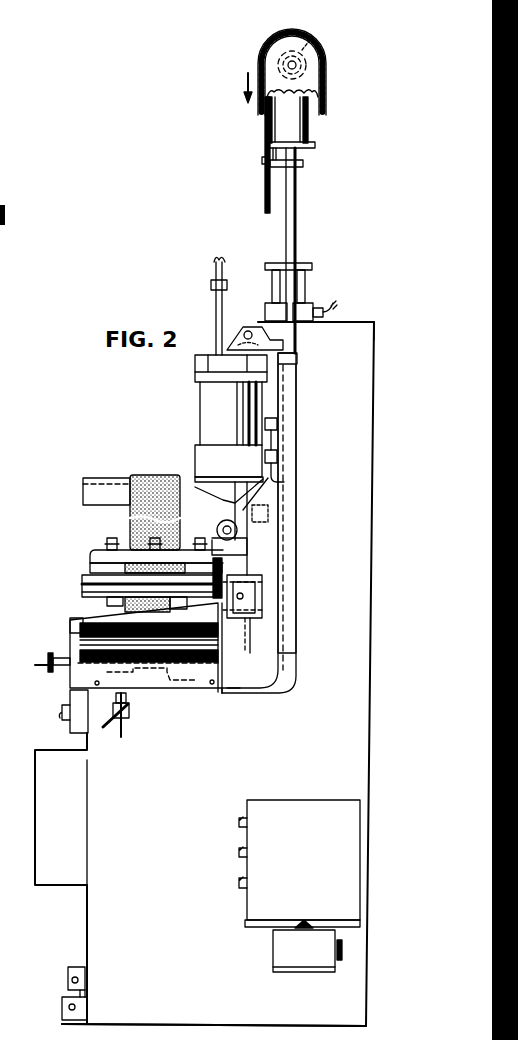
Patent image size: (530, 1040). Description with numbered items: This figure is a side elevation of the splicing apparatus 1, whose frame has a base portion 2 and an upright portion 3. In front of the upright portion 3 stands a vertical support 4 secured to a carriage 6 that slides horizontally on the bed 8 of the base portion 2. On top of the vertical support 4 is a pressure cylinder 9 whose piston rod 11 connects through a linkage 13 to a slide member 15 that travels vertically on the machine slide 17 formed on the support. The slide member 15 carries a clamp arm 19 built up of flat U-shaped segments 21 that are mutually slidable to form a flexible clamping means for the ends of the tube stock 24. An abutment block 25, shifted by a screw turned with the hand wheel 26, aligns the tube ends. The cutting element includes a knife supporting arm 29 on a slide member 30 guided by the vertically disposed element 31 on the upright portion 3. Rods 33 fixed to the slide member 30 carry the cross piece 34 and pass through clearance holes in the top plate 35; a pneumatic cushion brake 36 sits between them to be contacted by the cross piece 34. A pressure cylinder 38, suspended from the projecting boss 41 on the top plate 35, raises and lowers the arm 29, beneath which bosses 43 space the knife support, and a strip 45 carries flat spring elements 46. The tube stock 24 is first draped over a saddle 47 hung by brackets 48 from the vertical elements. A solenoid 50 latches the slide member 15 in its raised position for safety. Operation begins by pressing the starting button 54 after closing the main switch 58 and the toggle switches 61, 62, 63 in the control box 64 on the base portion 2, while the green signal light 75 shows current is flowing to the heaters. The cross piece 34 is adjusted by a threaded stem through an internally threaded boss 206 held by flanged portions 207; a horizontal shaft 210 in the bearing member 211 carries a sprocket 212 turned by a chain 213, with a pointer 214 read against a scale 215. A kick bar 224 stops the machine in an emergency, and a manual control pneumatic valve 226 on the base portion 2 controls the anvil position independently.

The splicing apparatus 1 is at (62, 833).
The base portion 2 is at (97, 942).
The upright portion 3 is at (342, 333).
The vertical support 4 is at (273, 652).
The carriage 6 is at (213, 678).
The bed 8 is at (170, 681).
The pressure cylinder 9 is at (205, 422).
The piston rod 11 is at (223, 510).
The linkage 13 is at (238, 530).
The slide member 15 is at (238, 555).
The machine slide 17 is at (247, 505).
The clamp arm 19 is at (83, 618).
The segment 21 is at (70, 628).
The tube stock 24 is at (148, 476).
The abutment block 25 is at (120, 658).
The hand wheel 26 is at (48, 655).
The knife supporting arm 29 is at (92, 555).
The slide member 30 is at (293, 362).
The vertically disposed element 31 is at (290, 392).
The rod 33 is at (298, 221).
The cross piece 34 is at (300, 163).
The top plate 35 is at (367, 320).
The pneumatic cushion brake 36 is at (302, 278).
The pressure cylinder 38 is at (260, 412).
The projecting boss 41 is at (270, 333).
The boss 43 is at (110, 572).
The strip 45 is at (82, 588).
The spring element 46 is at (186, 596).
The saddle 47 is at (93, 490).
The bracket 48 is at (270, 458).
The solenoid 50 is at (252, 598).
The starting button 54 is at (70, 705).
The main switch 58 is at (285, 953).
The toggle switch 61 is at (242, 822).
The toggle switch 62 is at (242, 853).
The toggle switch 63 is at (242, 888).
The control box 64 is at (283, 805).
The green signal light 75 is at (265, 312).
The internally threaded boss 206 is at (308, 128).
The flanged portion 207 is at (273, 145).
The horizontal shaft 210 is at (289, 62).
The bearing member 211 is at (315, 33).
The sprocket 212 is at (313, 62).
The chain 213 is at (258, 113).
The pointer 214 is at (262, 161).
The scale 215 is at (265, 202).
The kick bar 224 is at (72, 982).
The manual control pneumatic valve 226 is at (130, 715).